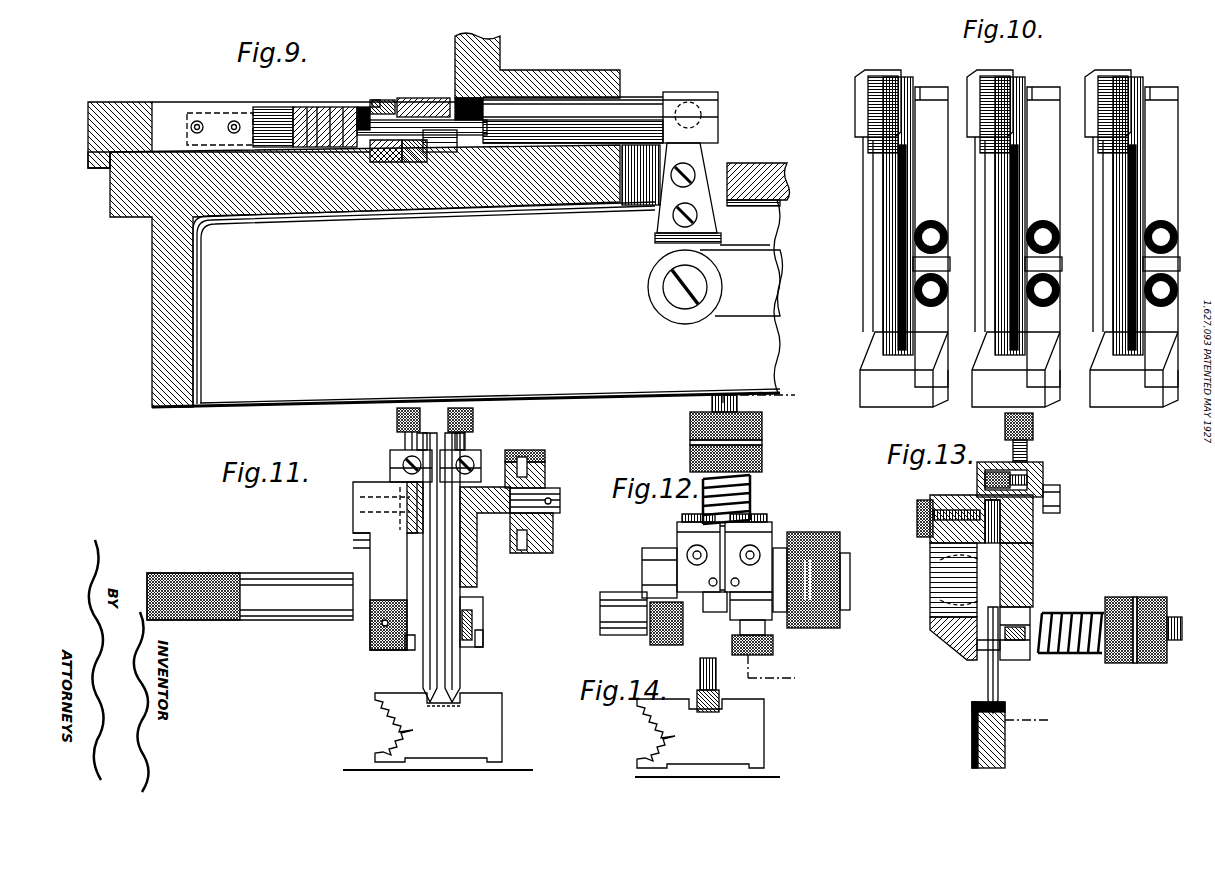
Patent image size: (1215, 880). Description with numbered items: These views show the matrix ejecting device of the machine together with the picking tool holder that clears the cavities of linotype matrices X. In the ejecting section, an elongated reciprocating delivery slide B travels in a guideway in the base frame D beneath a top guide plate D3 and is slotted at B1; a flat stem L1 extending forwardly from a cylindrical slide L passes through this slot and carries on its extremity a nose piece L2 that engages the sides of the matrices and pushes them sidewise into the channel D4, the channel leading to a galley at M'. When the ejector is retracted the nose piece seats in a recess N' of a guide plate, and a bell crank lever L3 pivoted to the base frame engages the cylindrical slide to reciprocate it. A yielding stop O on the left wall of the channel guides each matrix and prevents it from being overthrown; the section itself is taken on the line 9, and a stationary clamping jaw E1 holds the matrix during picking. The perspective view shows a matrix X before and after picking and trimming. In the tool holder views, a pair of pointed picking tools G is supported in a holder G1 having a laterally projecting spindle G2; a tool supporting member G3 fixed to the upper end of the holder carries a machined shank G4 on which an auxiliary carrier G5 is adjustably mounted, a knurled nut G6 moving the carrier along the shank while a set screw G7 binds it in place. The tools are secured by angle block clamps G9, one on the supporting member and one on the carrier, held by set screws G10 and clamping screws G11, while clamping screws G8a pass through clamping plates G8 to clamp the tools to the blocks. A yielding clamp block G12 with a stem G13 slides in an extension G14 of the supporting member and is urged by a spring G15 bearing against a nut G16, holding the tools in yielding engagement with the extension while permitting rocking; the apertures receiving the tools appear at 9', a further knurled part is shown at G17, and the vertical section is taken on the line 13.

In FIG. 9, the reciprocating slide B is at (397, 158).
In FIG. 9, the slot B1 is at (412, 112).
In FIG. 9, the base frame D is at (535, 81).
In FIG. 9, the top guide plate D3 is at (437, 96).
In FIG. 9, the channel D4 is at (271, 135).
In FIG. 9, the flange M' is at (94, 174).
In FIG. 9, the stop O is at (270, 107).
In FIG. 9, the matrices X is at (312, 107).
In FIG. 10, the matrices X is at (870, 195).
In FIG. 11, the matrices X is at (438, 731).
In FIG. 14, the matrices X is at (707, 717).
In FIG. 13, the matrices X is at (972, 748).
In FIG. 9, the cylindrical slide L is at (628, 102).
In FIG. 9, the flat stem L1 is at (392, 106).
In FIG. 9, the nose piece L2 is at (366, 110).
In FIG. 9, the bell crank lever L3 is at (706, 233).
In FIG. 9, the recess N' is at (393, 73).
In FIG. 11, the picking tools G is at (425, 668).
In FIG. 13, the picking tools G is at (998, 688).
In FIG. 11, the holder G1 is at (388, 566).
In FIG. 13, the holder G1 is at (932, 570).
In FIG. 11, the spindle G2 is at (290, 580).
In FIG. 12, the spindle G2 is at (615, 598).
In FIG. 13, the spindle G2 is at (930, 618).
In FIG. 11, the tool supporting member G3 is at (400, 522).
In FIG. 11, the shank G4 is at (552, 500).
In FIG. 11, the auxiliary carrier G5 is at (477, 545).
In FIG. 13, the auxiliary carrier G5 is at (1033, 540).
In FIG. 12, the knurled nut G6 is at (812, 535).
In FIG. 13, the set screw G7 is at (917, 525).
In FIG. 11, the clamping plates G8 is at (392, 462).
In FIG. 12, the clamping plates G8 is at (718, 612).
In FIG. 13, the clamping plates G8 is at (978, 475).
In FIG. 11, the clamping screws G8a is at (390, 468).
In FIG. 12, the clamping screws G8a is at (770, 620).
In FIG. 12, the clamps G9 is at (680, 535).
In FIG. 13, the clamps G9 is at (1040, 465).
In FIG. 11, the set screws G10 is at (397, 420).
In FIG. 12, the set screws G10 is at (680, 570).
In FIG. 13, the set screws G10 is at (1033, 430).
In FIG. 12, the clamping screws G11 is at (670, 640).
In FIG. 13, the clamping screws G11 is at (1060, 497).
In FIG. 11, the yielding clamp block G12 is at (480, 625).
In FIG. 13, the yielding clamp block G12 is at (1030, 625).
In FIG. 13, the stem G13 is at (1175, 622).
In FIG. 11, the extension G14 is at (483, 605).
In FIG. 12, the extension G14 is at (848, 580).
In FIG. 13, the extension G14 is at (1030, 610).
In FIG. 12, the spring G15 is at (752, 500).
In FIG. 13, the spring G15 is at (1070, 620).
In FIG. 11, the nut G16 is at (545, 455).
In FIG. 12, the nut G16 is at (762, 445).
In FIG. 13, the nut G16 is at (1130, 600).
In FIG. 12, the thumb nut G17 is at (762, 655).
In FIG. 11, the section line 9 is at (386, 660).
In FIG. 11, the pin 9' is at (496, 643).
In FIG. 13, the pin 9' is at (1022, 666).
In FIG. 12, the section line 13 is at (774, 535).
In FIG. 13, the stationary clamping jaw E1 is at (1027, 708).